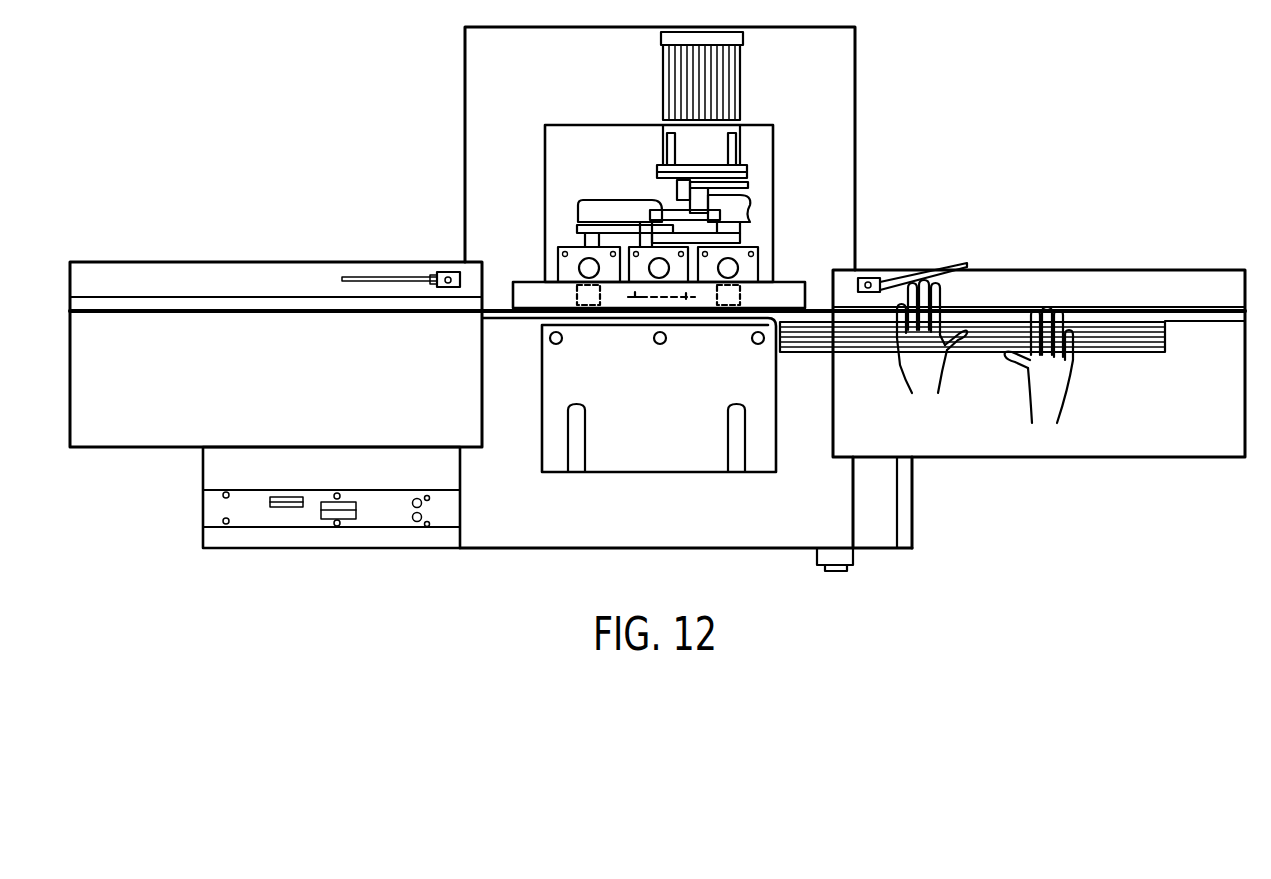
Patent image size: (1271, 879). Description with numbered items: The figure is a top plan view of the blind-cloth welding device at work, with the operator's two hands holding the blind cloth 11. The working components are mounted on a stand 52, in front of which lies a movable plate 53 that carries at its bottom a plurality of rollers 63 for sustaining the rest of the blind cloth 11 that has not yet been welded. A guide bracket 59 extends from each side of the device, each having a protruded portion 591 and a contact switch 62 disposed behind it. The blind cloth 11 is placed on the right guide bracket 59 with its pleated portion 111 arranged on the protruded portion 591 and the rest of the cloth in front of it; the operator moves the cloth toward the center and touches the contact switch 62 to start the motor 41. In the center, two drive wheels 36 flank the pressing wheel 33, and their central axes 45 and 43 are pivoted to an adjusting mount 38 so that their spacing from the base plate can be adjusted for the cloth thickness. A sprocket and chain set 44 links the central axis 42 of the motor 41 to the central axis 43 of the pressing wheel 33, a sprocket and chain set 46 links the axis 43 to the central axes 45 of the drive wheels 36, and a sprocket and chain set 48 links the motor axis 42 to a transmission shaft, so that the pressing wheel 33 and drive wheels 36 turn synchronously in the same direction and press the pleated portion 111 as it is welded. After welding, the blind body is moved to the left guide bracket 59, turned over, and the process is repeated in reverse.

The blind cloth 11 is at (1110, 337).
The pleated portion 111 is at (1017, 315).
The pressing wheel 33 is at (670, 290).
The drive wheels 36 is at (575, 298).
The adjusting mount 38 is at (607, 233).
The motor 41 is at (725, 97).
The central axis of the motor 42 is at (708, 202).
The central axis of the pressing wheel 43 is at (676, 215).
The sprocket and chain set 44 is at (655, 212).
The central axes of the drive wheels 45 is at (578, 240).
The sprocket and chain set 46 is at (645, 247).
The sprocket and chain set 48 is at (743, 177).
The stand 52 is at (739, 517).
The movable plate 53 is at (613, 435).
The guide brackets 59 is at (123, 412).
The protruded portion 591 is at (195, 302).
The contact switch 62 is at (448, 272).
The rollers 63 is at (562, 340).